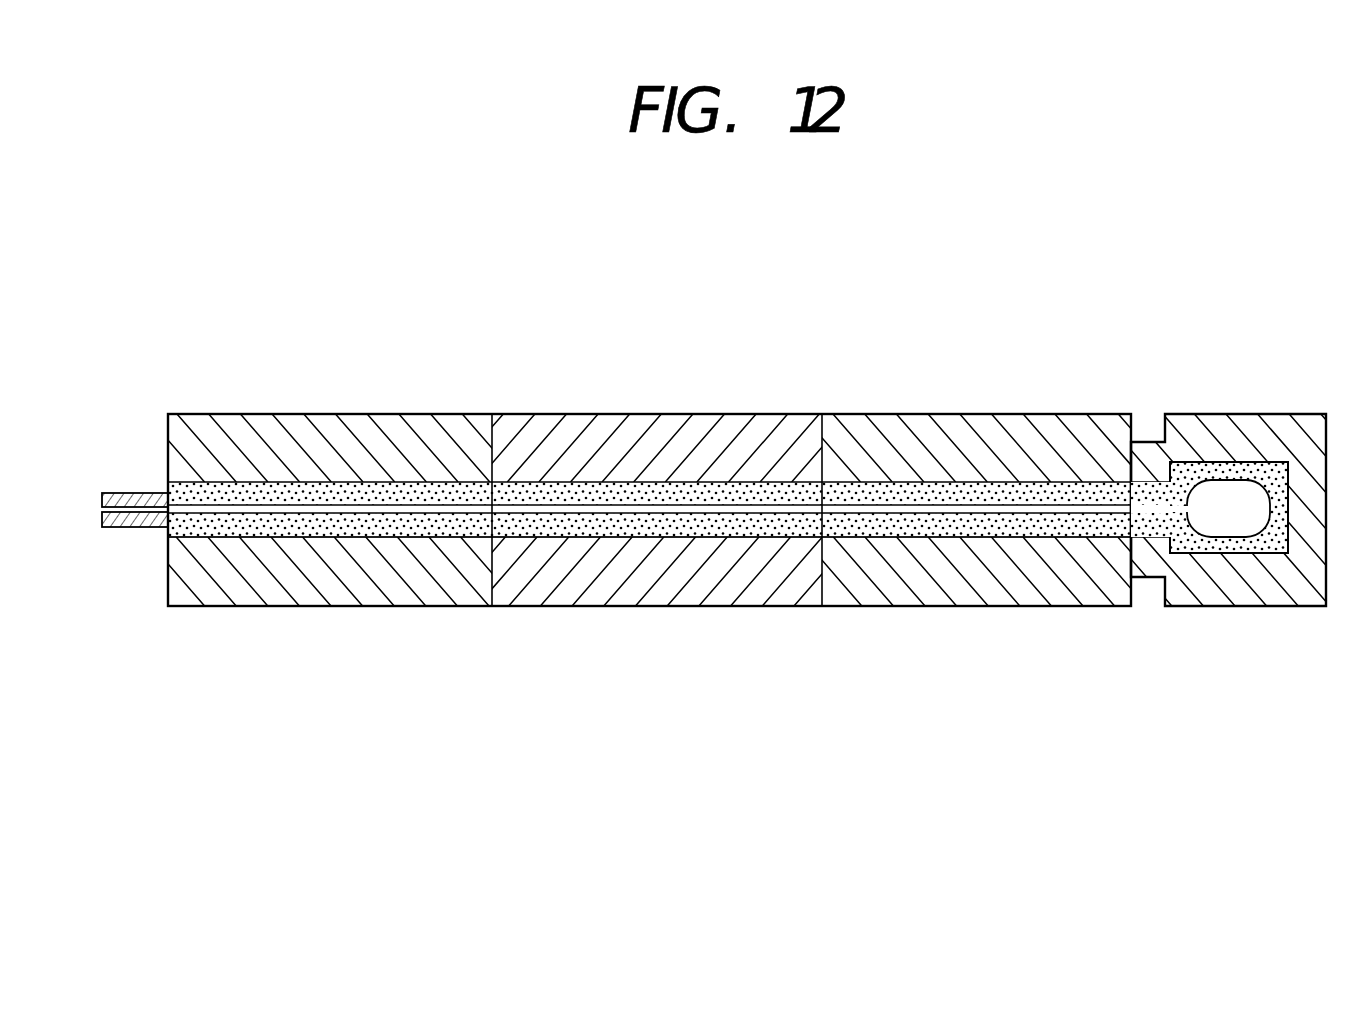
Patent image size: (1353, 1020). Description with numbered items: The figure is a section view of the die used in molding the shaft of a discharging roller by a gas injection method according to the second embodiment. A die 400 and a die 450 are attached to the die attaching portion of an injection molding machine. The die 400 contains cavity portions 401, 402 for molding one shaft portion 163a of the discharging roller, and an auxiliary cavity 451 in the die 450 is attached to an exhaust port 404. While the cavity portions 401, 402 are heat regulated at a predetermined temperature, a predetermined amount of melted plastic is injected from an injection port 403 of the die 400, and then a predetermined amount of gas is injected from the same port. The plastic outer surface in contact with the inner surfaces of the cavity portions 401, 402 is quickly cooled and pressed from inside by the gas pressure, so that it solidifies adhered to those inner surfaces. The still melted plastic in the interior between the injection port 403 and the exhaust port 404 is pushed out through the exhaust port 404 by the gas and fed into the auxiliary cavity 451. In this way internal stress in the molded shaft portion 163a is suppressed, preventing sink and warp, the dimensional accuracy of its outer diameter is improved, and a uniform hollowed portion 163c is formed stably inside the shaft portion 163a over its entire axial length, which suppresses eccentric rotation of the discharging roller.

The die 400 is at (824, 363).
The cavity portion 401 is at (613, 484).
The cavity portion 402 is at (630, 537).
The injection port 403 is at (168, 514).
The exhaust port 404 is at (1136, 528).
The die 450 is at (1242, 393).
The auxiliary cavity 451 is at (1215, 553).
The shaft portion 163a is at (558, 539).
The hollowed portion 163c is at (782, 510).